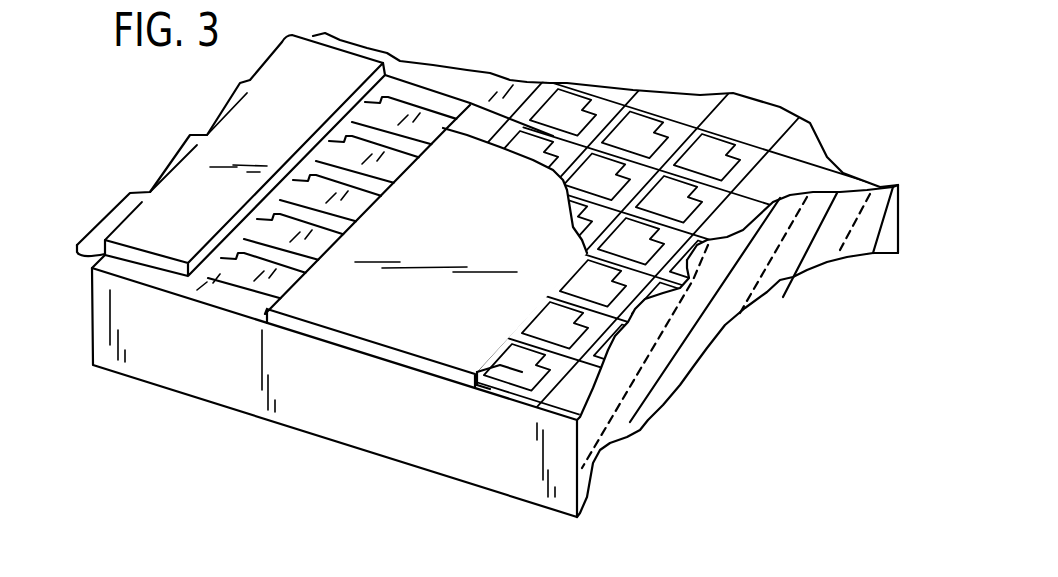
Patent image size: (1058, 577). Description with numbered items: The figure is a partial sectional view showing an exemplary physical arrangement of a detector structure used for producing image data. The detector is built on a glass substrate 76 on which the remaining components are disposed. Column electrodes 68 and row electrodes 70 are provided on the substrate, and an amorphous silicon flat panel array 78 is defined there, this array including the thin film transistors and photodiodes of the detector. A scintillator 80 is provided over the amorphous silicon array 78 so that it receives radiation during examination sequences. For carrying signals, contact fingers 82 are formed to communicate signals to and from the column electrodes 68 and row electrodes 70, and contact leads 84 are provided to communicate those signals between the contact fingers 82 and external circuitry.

The column electrodes 68 is at (615, 310).
The row electrodes 70 is at (782, 140).
The glass substrate 76 is at (532, 487).
The amorphous silicon flat panel array 78 is at (498, 384).
The scintillator 80 is at (375, 322).
The contact fingers 82 is at (303, 218).
The contact leads 84 is at (150, 247).